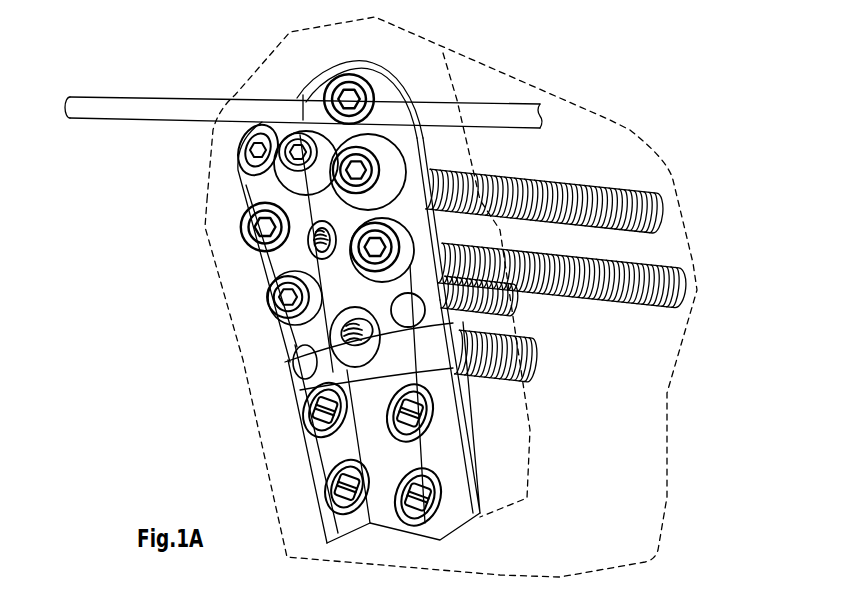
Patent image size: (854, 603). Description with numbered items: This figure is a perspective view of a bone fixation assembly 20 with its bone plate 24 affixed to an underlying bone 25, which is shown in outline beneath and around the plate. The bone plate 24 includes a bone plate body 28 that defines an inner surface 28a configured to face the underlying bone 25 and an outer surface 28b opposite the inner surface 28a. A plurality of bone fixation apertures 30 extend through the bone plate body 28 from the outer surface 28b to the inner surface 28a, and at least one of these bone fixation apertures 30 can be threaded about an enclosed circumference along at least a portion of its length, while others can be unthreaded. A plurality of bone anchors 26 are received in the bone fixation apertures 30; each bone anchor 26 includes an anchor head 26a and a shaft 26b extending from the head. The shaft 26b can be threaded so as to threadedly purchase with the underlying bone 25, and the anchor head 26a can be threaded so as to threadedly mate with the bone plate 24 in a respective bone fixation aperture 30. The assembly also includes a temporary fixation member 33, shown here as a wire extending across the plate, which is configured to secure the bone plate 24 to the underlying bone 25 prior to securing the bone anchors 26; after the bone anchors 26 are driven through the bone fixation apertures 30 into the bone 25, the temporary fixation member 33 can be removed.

The bone fixation assembly 20 is at (90, 247).
The bone plate 24 is at (298, 446).
The underlying bone 25 is at (637, 497).
The bone anchor 26 is at (537, 133).
The anchor head 26a is at (382, 156).
The shaft 26b is at (532, 178).
The bone plate body 28 is at (452, 468).
The inner surface 28a is at (462, 412).
The outer surface 28b is at (280, 356).
The bone fixation aperture 30 is at (447, 322).
The temporary fixation member 33 is at (108, 105).